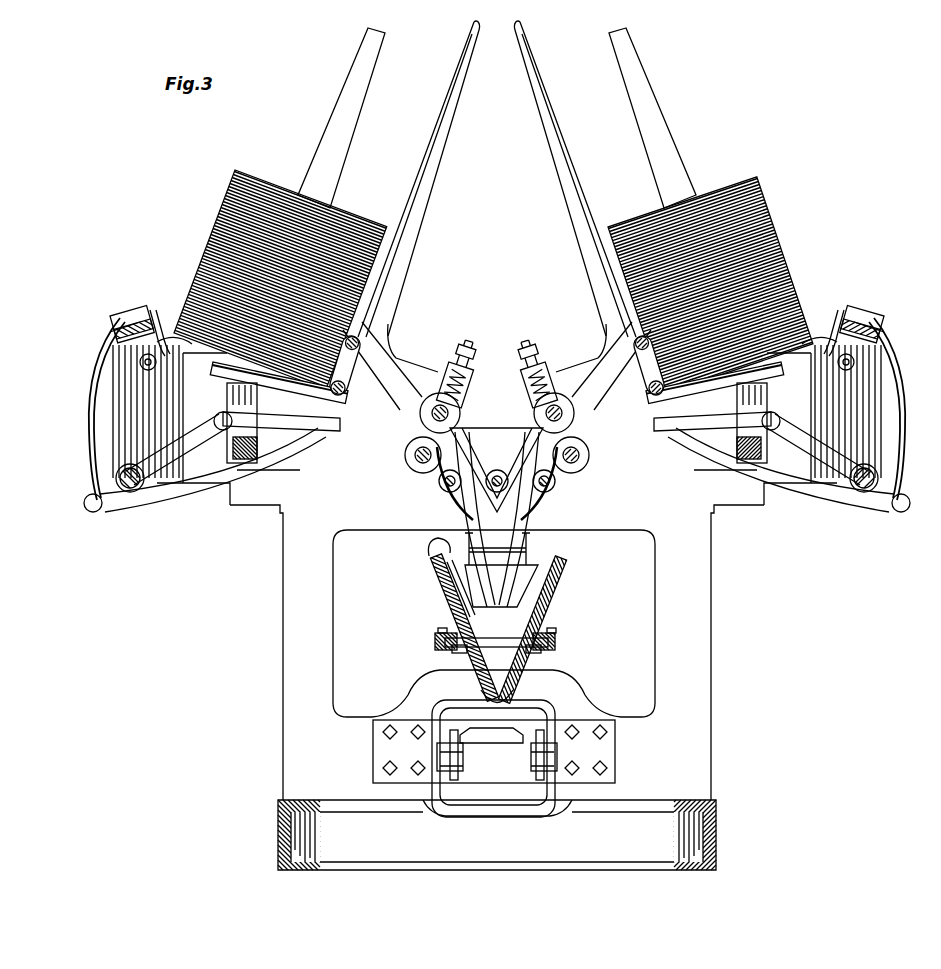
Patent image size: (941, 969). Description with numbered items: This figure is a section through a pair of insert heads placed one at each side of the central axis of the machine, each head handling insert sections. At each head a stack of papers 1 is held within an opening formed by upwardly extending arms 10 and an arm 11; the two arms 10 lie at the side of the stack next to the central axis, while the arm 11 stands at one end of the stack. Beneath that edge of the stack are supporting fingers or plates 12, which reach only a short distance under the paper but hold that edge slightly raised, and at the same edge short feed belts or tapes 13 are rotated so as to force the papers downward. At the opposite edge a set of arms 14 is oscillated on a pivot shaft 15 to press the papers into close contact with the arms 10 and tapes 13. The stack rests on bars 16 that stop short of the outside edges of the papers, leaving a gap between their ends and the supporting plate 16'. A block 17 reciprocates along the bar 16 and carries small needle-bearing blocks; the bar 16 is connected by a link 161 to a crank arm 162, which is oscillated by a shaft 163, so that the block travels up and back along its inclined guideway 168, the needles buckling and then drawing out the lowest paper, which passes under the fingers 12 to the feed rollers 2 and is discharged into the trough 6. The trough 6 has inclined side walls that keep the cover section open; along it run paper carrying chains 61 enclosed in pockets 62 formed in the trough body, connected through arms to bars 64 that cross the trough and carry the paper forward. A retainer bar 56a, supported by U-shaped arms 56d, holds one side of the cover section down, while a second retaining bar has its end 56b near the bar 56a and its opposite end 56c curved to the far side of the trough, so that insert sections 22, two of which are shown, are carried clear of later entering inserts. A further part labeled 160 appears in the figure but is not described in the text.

The stacks of papers 1 is at (222, 230).
The feed rollers 2 is at (423, 440).
The trough 6 is at (552, 580).
The arms 10 is at (425, 195).
The arm 11 is at (335, 156).
The supporting fingers or plates 12 is at (328, 430).
The feed belts or tapes 13 is at (343, 388).
The arms 14 is at (163, 320).
The pivot shaft 15 is at (143, 350).
The bars 16 is at (495, 389).
The supporting plate 16' is at (476, 349).
The block 17 is at (612, 430).
The insert sections 22 is at (528, 547).
The retainer bar 56a is at (440, 552).
The end of retaining bar 56b is at (470, 580).
The opposite end of retaining bar 56c is at (515, 590).
The arms 56d is at (445, 564).
The paper feeding or carrying chain 61 is at (448, 645).
The pockets 62 is at (543, 643).
The bars 64 is at (492, 645).
The pivot 160 is at (214, 421).
The link 161 is at (304, 447).
The crank arm 162 is at (180, 440).
The shaft 163 is at (118, 470).
The inclined guideway 168 is at (307, 397).